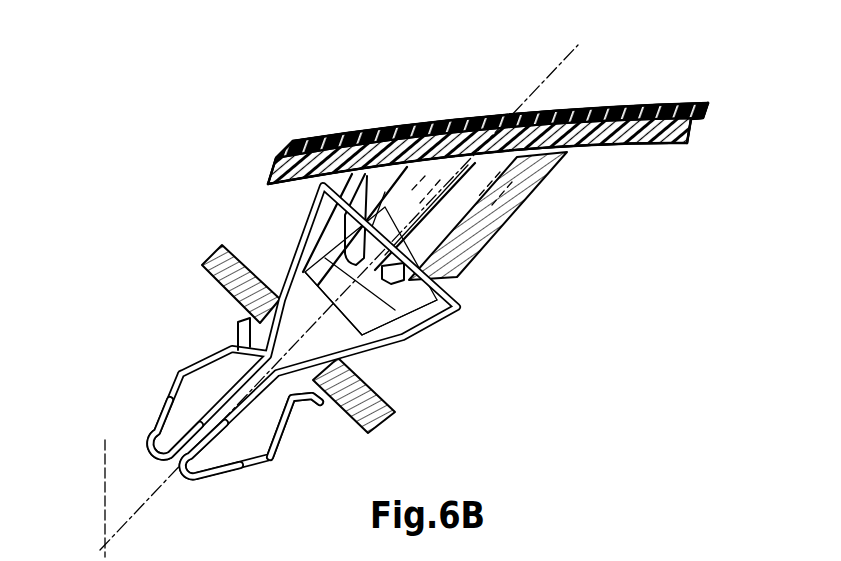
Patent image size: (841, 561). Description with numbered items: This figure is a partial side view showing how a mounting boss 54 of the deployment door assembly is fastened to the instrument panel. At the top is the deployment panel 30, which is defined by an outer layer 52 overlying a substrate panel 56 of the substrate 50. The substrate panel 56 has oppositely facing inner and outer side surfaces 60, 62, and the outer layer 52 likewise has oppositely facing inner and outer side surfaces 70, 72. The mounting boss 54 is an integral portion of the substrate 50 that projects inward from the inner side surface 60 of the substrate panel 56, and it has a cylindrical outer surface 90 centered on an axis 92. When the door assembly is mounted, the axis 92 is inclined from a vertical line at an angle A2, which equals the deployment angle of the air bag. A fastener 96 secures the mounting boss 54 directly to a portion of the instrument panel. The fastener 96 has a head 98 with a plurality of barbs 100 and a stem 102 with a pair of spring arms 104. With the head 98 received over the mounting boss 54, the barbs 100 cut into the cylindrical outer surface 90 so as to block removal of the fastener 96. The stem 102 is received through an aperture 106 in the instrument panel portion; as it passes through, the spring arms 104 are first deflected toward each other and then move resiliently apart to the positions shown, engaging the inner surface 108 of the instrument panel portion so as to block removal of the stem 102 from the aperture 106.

The deployment panel 30 is at (308, 133).
The substrate 50 is at (652, 147).
The outer layer 52 is at (650, 106).
The mounting boss 54 is at (512, 227).
The substrate panel 56 is at (283, 176).
The inner side surface 60 is at (291, 183).
The outer side surface 62 is at (301, 145).
The inner side surface 70 is at (690, 143).
The outer side surface 72 is at (708, 103).
The cylindrical outer surface 90 is at (372, 298).
The axis 92 is at (548, 80).
The fastener 96 is at (172, 364).
The head 98 is at (445, 320).
The barbs 100 is at (357, 243).
The stem 102 is at (220, 433).
The spring arms 104 is at (165, 402).
The aperture 106 is at (264, 344).
The inner surface 108 is at (205, 283).
The angle A2 is at (148, 473).